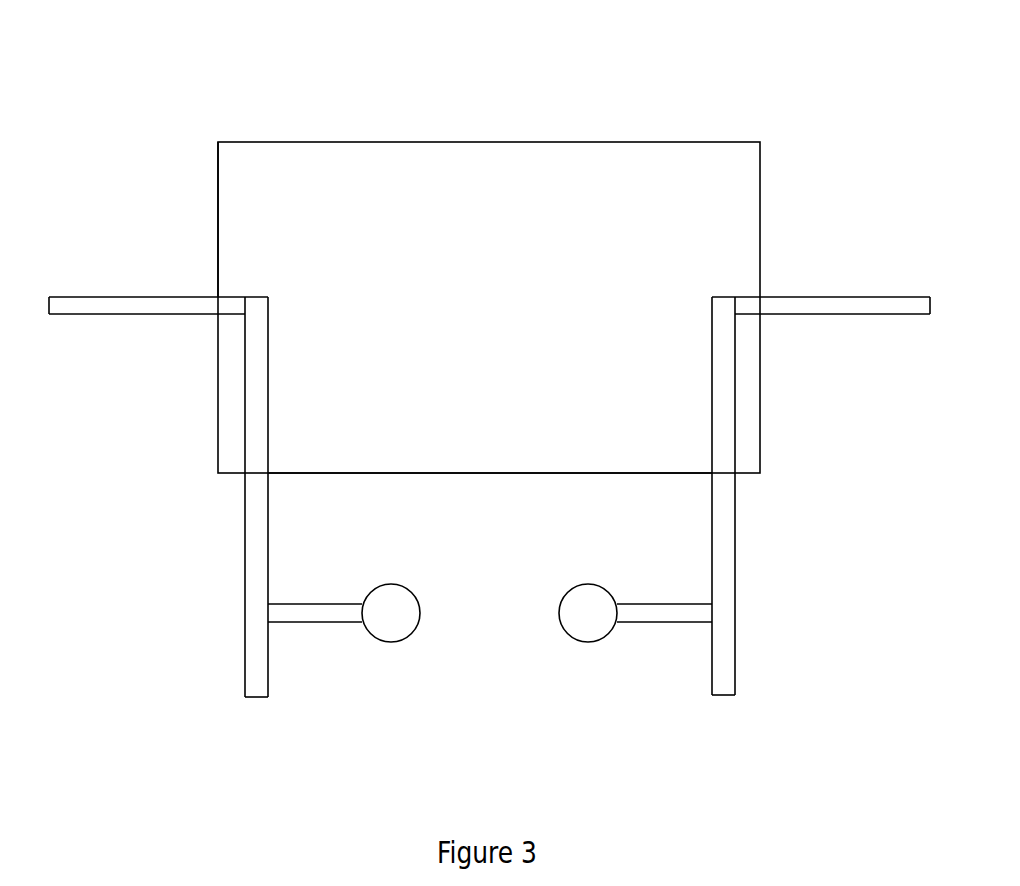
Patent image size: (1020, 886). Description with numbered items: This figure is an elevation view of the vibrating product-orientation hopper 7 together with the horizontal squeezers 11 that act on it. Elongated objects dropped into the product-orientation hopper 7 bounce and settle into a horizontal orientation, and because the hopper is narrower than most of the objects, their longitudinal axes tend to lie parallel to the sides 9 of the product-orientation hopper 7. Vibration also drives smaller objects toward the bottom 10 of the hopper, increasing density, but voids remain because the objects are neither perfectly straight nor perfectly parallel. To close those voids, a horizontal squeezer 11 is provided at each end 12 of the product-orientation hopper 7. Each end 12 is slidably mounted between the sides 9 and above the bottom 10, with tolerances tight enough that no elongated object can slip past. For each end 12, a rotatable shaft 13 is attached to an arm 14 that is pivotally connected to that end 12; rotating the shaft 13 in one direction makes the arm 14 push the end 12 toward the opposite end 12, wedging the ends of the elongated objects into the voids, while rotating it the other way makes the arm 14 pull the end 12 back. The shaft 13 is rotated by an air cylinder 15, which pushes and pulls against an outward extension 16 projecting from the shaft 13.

The product-orientation hopper 7 is at (471, 238).
The sides 9 is at (250, 207).
The bottom 10 is at (502, 473).
The horizontal squeezer 11 is at (489, 468).
The end 12 is at (218, 401).
The rotatable shaft 13 is at (257, 528).
The arm 14 is at (93, 305).
The air cylinder 15 is at (578, 623).
The outward extension 16 is at (317, 615).